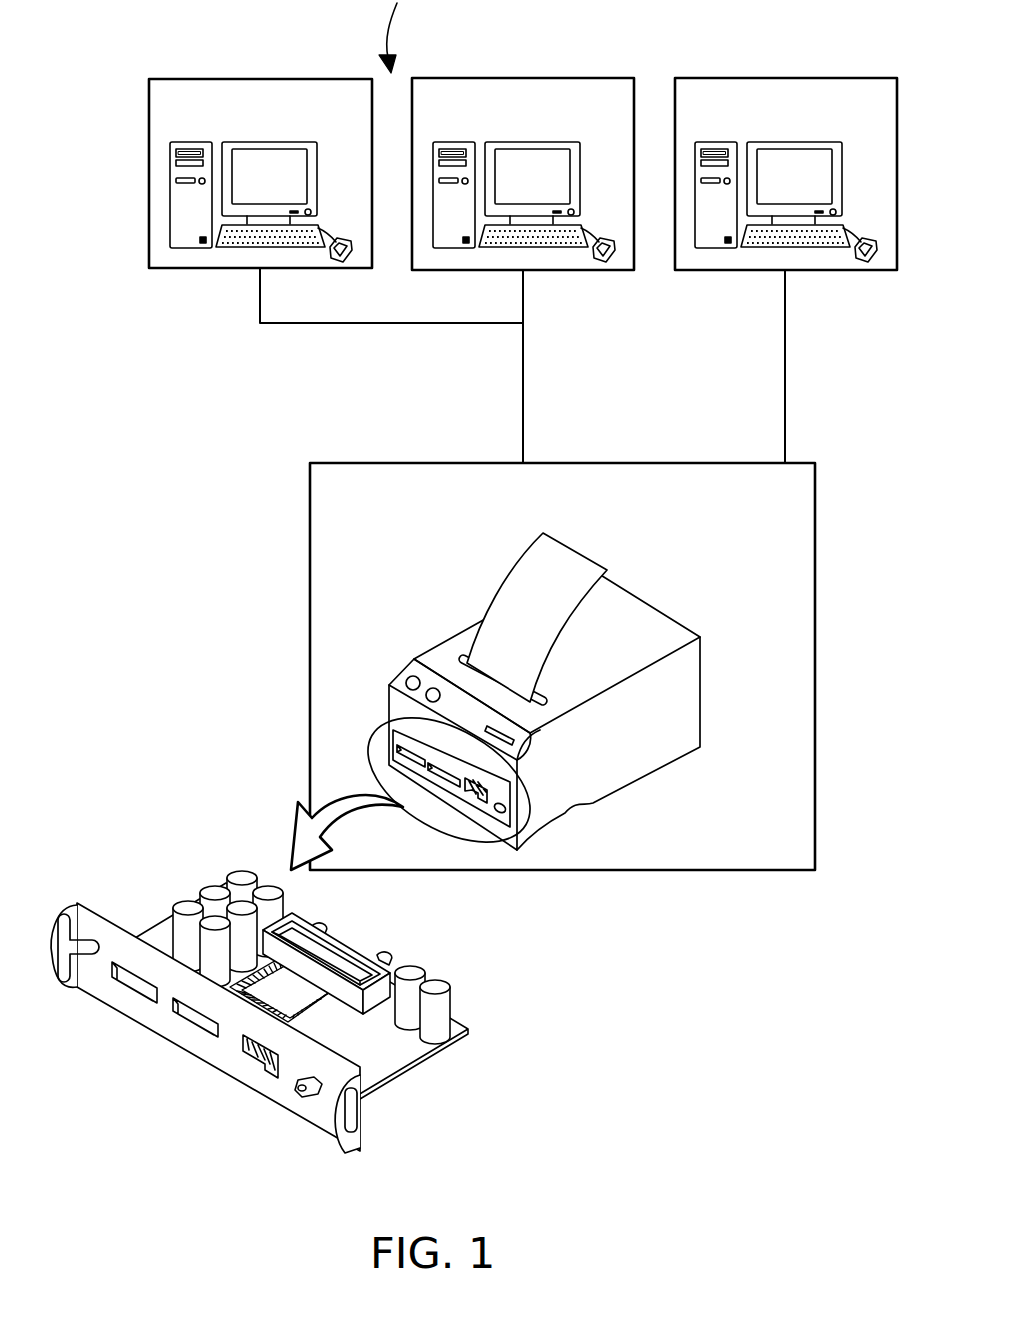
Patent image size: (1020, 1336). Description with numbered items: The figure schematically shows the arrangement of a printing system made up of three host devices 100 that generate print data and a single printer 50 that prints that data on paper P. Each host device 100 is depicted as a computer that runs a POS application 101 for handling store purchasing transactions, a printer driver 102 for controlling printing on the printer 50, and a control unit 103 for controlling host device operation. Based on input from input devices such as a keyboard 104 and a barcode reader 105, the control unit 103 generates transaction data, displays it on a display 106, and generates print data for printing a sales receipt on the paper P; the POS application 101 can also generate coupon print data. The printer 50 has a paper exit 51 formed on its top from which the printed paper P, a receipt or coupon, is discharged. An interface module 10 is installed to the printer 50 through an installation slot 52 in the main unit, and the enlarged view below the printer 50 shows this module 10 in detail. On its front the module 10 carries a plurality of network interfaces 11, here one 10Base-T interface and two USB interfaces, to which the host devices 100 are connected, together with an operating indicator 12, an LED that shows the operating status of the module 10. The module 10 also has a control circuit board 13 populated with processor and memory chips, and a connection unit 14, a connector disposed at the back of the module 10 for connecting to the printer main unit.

The host device 100 is at (263, 79).
The POS application 101 is at (177, 189).
The printer driver 102 is at (177, 217).
The control unit 103 is at (177, 240).
The keyboard 104 is at (231, 236).
The barcode reader 105 is at (342, 259).
The display 106 is at (285, 178).
The printer 50 is at (650, 463).
The paper exit 51 is at (567, 715).
The installation slot 52 is at (395, 700).
The interface module 10 is at (511, 700).
The paper P is at (518, 567).
The network interface 11 is at (247, 1057).
The operating indicator 12 is at (302, 1098).
The control circuit board 13 is at (393, 1053).
The connection unit 14 is at (353, 940).